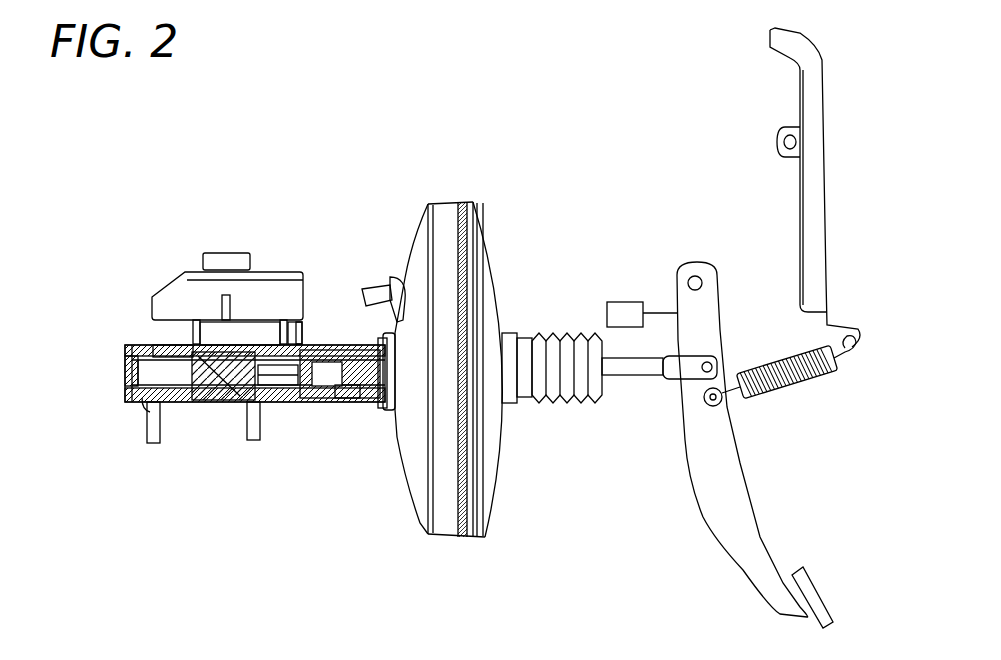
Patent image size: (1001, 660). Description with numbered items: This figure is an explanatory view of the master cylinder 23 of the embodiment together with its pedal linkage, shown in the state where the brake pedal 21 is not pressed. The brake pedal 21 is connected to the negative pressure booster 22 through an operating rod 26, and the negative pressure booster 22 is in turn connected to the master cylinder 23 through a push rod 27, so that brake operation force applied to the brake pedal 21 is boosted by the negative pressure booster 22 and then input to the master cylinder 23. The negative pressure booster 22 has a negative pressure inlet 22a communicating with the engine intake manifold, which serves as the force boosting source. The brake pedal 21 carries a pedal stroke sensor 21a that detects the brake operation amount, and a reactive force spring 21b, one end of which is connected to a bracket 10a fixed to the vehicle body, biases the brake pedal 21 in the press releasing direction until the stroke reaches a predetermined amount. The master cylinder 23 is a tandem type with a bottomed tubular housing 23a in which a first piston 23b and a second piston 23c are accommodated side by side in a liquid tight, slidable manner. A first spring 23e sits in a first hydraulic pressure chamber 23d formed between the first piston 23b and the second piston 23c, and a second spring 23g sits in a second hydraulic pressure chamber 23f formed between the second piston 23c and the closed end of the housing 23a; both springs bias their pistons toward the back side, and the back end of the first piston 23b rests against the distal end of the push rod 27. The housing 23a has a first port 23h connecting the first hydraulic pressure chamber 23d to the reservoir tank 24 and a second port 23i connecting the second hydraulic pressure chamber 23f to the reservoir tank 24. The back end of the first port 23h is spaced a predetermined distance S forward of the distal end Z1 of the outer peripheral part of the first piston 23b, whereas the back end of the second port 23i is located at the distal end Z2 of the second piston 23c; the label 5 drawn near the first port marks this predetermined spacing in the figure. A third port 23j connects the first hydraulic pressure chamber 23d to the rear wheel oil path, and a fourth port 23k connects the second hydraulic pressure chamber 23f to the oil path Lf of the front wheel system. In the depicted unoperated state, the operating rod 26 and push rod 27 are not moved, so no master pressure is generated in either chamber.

The negative pressure booster 22 is at (450, 203).
The negative pressure inlet 22a is at (378, 285).
The reservoir tank 24 is at (265, 268).
The master cylinder 23 is at (116, 348).
The housing 23a is at (150, 350).
The second port 23i is at (190, 336).
The first port 23h is at (278, 337).
The second hydraulic pressure chamber 23f is at (140, 377).
The second piston 23c is at (215, 401).
The first spring 23e is at (278, 403).
The first hydraulic pressure chamber 23d is at (285, 397).
The first piston 23b is at (346, 399).
The push rod 27 is at (386, 394).
The second spring 23g is at (172, 403).
The fourth port 23k is at (146, 403).
The third port 23j is at (258, 420).
The oil path Lf is at (147, 430).
The stroke sensor 5 is at (303, 340).
The distal end Z1 is at (306, 348).
The distal end Z2 is at (193, 320).
The operating rod 26 is at (636, 378).
The pedal stroke sensor 21a is at (627, 302).
The brake pedal 21 is at (740, 462).
The reactive force spring 21b is at (778, 353).
The bracket 10a is at (824, 182).